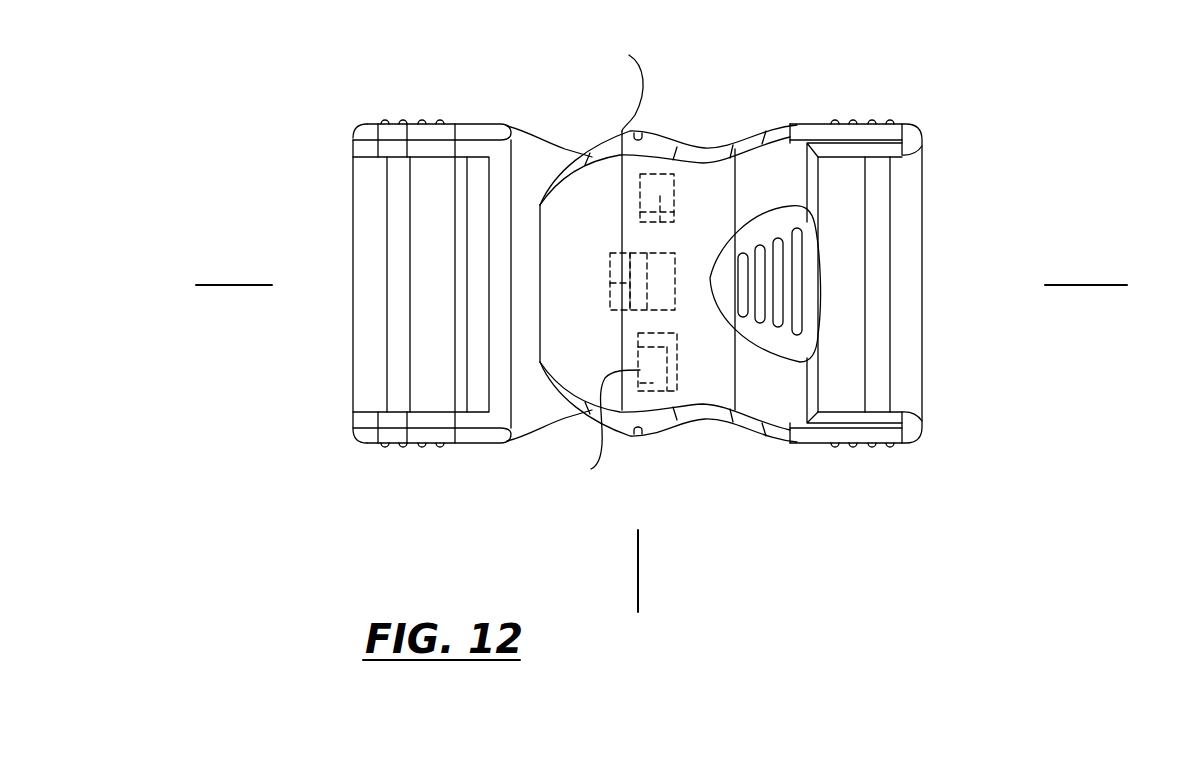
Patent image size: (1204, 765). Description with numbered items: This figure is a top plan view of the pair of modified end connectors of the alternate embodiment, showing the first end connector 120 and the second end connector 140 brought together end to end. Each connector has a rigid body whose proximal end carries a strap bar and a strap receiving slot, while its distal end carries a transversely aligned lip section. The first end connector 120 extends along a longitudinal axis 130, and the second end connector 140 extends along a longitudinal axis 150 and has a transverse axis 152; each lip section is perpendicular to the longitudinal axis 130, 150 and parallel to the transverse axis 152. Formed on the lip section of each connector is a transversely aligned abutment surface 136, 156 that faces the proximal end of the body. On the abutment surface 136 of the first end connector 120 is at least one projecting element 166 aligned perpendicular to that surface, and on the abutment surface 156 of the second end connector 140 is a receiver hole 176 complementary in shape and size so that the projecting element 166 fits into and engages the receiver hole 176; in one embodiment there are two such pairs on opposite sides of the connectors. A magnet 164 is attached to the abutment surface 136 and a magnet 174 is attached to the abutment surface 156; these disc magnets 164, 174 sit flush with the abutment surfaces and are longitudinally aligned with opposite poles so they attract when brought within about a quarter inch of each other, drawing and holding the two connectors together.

The first end connector 120 is at (887, 100).
The longitudinal axis 130 is at (1088, 285).
The second end connector 140 is at (392, 102).
The longitudinal axis 150 is at (238, 285).
The transverse axis 152 is at (640, 572).
The abutment surface 136 is at (637, 320).
The abutment surface 156 is at (657, 320).
The magnet 164 is at (612, 265).
The projecting element 166 is at (590, 261).
The magnet 174 is at (677, 265).
The receiver hole 176 is at (622, 170).